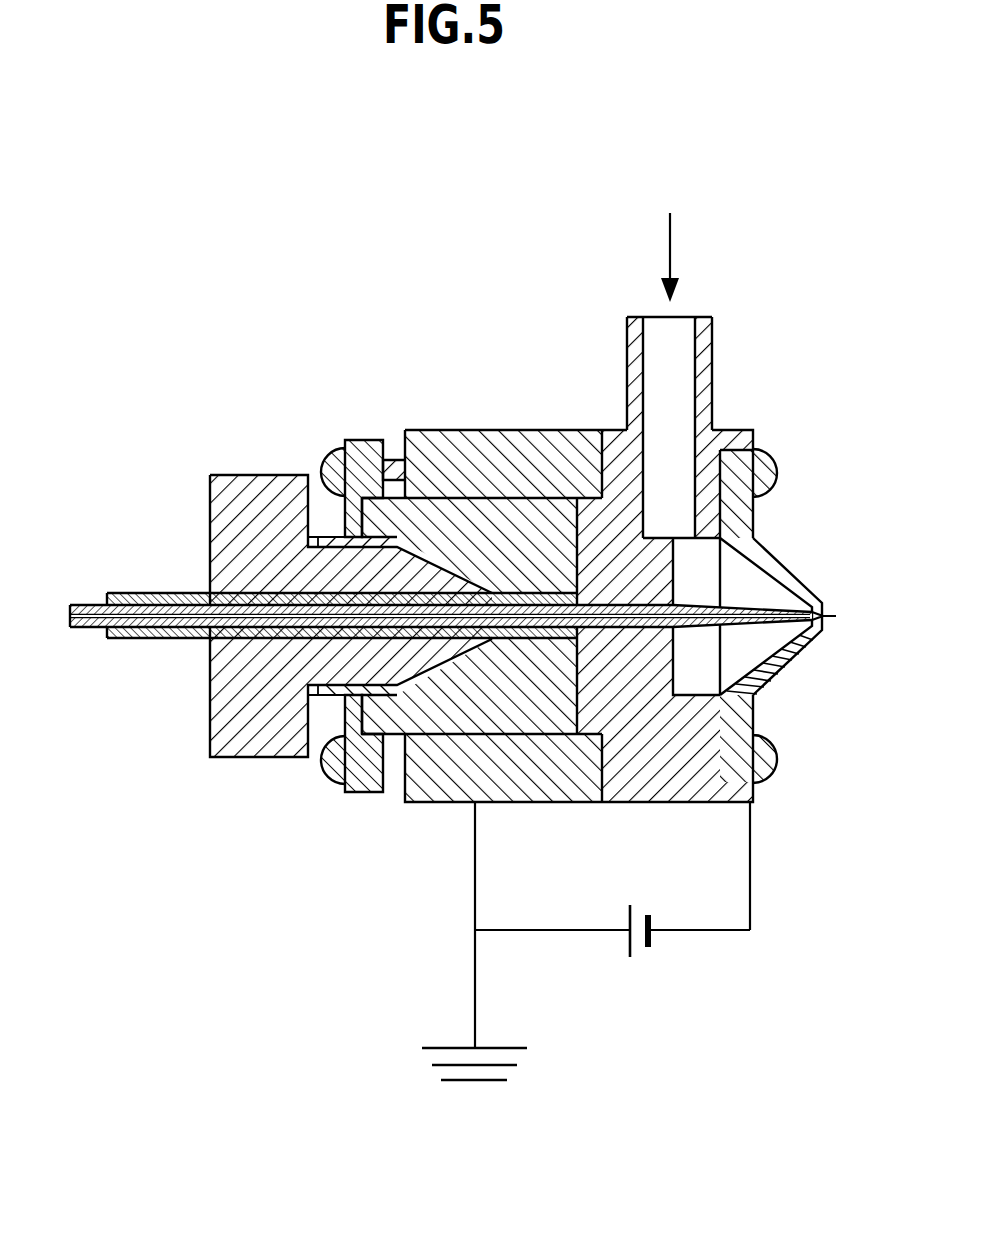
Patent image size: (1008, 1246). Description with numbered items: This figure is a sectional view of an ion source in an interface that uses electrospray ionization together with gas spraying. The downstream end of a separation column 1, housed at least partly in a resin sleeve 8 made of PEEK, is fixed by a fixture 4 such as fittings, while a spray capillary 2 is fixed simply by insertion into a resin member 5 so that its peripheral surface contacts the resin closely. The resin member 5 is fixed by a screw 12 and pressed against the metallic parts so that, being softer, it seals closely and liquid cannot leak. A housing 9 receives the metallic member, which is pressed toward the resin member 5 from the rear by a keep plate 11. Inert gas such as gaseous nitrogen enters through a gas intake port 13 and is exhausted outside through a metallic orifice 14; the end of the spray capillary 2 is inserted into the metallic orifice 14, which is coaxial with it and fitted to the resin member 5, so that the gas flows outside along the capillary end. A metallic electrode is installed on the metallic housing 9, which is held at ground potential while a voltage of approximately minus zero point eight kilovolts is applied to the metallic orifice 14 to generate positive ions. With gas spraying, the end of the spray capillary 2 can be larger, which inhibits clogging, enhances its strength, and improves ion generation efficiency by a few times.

The separation column 1 is at (85, 603).
The spray capillary 2 is at (755, 605).
The fixture 4 is at (257, 475).
The resin member 5 is at (713, 803).
The resin sleeve 8 is at (153, 642).
The housing 9 is at (477, 430).
The keep plate 11 is at (367, 442).
The screw 12 is at (318, 777).
The gas intake port 13 is at (675, 317).
The metallic orifice 14 is at (835, 627).